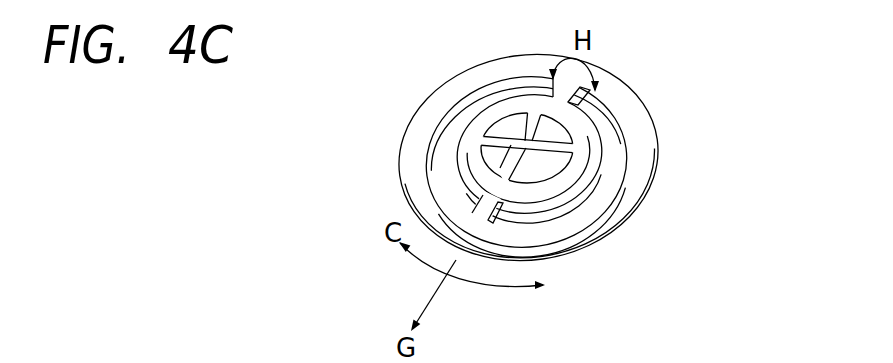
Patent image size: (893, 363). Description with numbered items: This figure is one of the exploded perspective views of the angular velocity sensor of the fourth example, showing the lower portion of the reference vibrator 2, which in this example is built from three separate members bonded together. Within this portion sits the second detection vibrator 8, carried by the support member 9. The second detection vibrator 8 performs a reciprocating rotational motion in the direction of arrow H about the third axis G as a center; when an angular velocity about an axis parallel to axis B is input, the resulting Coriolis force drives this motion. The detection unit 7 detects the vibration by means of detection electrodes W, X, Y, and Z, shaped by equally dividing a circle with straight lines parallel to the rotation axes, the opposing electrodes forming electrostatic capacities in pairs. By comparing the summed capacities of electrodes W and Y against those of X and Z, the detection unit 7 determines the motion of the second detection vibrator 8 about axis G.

The reference vibrator 2 is at (418, 106).
The detection unit 7 is at (520, 145).
The second detection vibrator 8 is at (596, 128).
The support member 9 is at (563, 93).